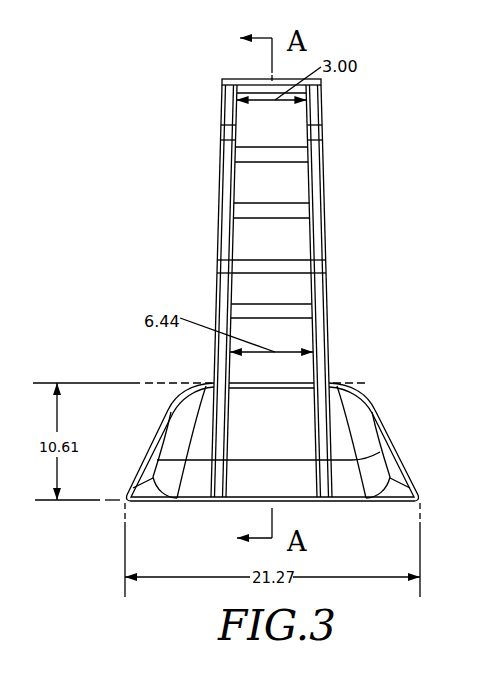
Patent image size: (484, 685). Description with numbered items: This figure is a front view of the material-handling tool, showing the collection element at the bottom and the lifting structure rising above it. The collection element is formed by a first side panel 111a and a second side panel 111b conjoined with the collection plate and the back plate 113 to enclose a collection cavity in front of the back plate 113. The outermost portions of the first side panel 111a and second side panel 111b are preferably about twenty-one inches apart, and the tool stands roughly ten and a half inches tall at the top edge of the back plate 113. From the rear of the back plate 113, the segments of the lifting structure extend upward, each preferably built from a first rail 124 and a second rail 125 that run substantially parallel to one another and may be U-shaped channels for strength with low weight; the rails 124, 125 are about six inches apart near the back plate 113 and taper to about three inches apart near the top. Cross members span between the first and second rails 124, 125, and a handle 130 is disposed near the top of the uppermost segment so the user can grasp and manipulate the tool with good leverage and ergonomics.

The handle 130 is at (252, 90).
The second rail 125 is at (219, 172).
The first rail 124 is at (324, 172).
The back plate 113 is at (302, 405).
The first side panel 111a is at (382, 418).
The second side panel 111b is at (155, 458).